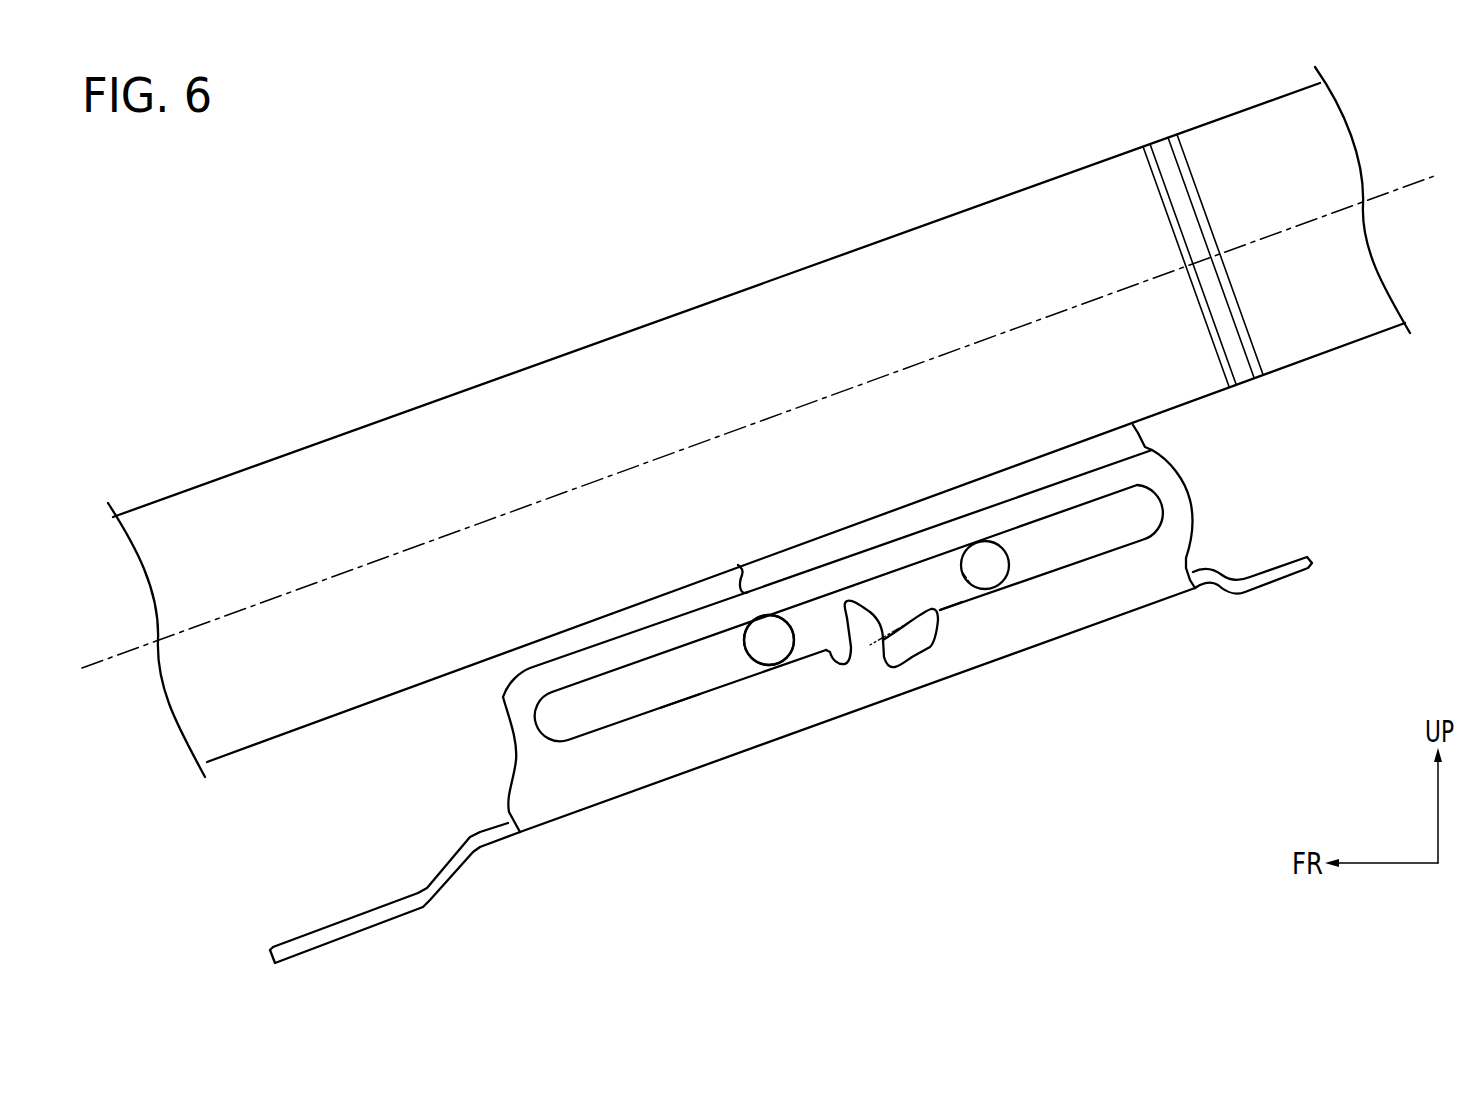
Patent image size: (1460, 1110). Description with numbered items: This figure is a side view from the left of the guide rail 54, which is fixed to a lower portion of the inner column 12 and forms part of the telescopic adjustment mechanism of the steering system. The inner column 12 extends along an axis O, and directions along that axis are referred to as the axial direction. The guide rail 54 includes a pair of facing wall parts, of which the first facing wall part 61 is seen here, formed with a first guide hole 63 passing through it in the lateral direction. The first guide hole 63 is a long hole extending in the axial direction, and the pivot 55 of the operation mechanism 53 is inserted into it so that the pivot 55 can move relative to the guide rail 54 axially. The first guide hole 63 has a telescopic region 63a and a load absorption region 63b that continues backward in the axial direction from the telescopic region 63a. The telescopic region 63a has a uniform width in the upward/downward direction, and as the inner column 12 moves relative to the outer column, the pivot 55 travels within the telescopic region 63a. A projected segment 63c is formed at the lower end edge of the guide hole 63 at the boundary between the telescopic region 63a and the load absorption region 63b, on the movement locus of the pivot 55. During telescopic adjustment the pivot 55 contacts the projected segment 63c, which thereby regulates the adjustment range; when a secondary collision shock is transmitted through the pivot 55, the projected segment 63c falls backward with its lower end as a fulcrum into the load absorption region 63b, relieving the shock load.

The inner column 12 is at (723, 317).
The axis O is at (1403, 183).
The operation mechanism 53 is at (811, 705).
The guide rail 54 is at (1071, 641).
The pivot 55 is at (768, 645).
The first facing wall part 61 is at (1117, 572).
The first guide hole 63 is at (628, 682).
The telescopic region 63a is at (675, 699).
The load absorption region 63b is at (954, 607).
The projected segment 63c is at (863, 612).